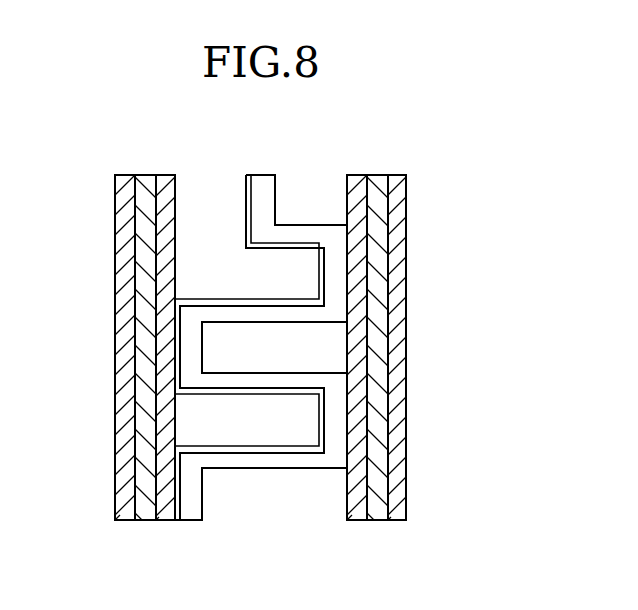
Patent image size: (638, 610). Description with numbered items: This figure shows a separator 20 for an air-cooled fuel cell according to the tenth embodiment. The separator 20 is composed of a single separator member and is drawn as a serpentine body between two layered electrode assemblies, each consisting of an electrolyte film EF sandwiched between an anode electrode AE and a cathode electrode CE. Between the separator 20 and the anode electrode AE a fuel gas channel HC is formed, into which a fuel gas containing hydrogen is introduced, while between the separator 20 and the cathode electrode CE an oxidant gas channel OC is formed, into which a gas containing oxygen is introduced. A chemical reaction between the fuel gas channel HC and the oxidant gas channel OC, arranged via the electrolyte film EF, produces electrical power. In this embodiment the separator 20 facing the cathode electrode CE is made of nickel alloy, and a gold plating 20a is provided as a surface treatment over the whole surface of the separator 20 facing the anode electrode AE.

The electrolyte film EF is at (145, 175).
The cathode electrode CE is at (125, 520).
The anode electrode AE is at (162, 520).
The separator 20 is at (261, 320).
The gold plating 20a is at (246, 206).
The fuel gas channel HC is at (192, 421).
The oxidant gas channel OC is at (335, 353).